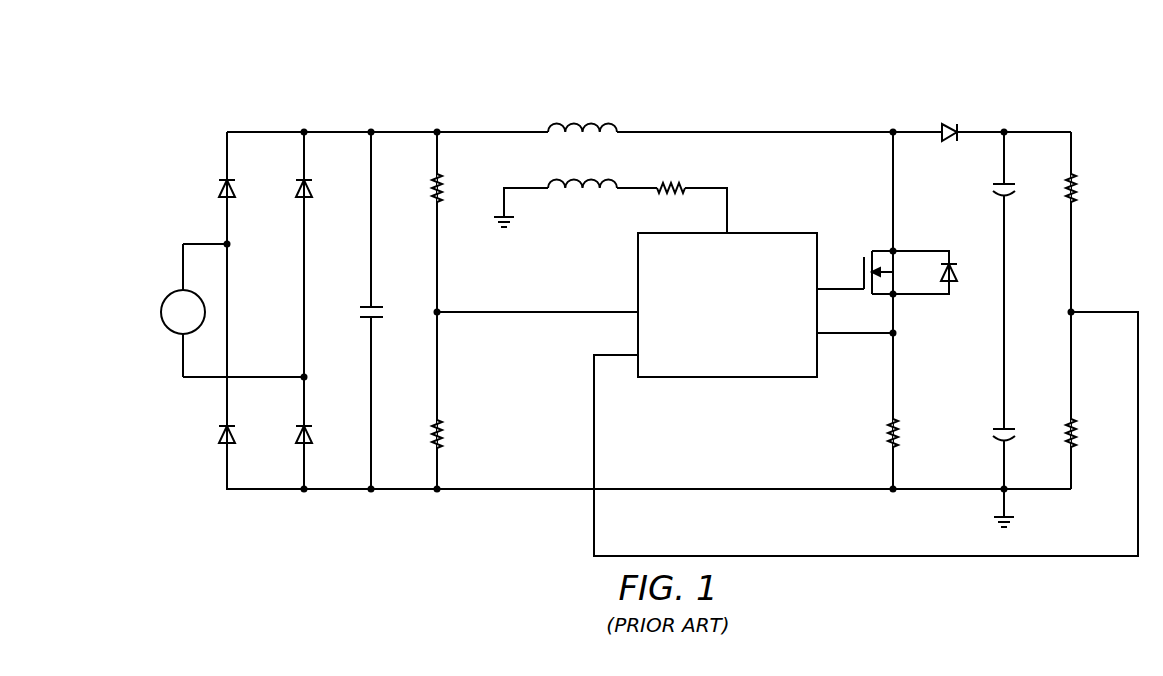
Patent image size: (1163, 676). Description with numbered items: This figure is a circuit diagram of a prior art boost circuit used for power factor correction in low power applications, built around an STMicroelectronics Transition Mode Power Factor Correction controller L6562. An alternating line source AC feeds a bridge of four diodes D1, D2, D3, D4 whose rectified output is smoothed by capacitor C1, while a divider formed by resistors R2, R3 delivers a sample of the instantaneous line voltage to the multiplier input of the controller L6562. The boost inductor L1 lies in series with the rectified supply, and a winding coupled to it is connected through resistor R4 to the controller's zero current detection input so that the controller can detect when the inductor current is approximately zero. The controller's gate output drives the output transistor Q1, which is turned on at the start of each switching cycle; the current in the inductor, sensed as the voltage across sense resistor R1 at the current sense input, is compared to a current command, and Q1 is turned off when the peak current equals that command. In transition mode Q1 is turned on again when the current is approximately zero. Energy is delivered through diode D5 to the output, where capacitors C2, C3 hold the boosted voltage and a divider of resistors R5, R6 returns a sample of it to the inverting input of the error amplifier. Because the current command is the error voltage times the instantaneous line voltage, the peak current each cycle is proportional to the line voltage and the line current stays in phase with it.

The AC voltage source AC is at (183, 312).
The bridge rectifier diode D1 is at (242, 189).
The bridge rectifier diode D2 is at (242, 435).
The bridge rectifier diode D3 is at (319, 189).
The bridge rectifier diode D4 is at (319, 435).
The input filter capacitor C1 is at (385, 313).
The voltage divider resistor R2 is at (452, 188).
The voltage divider resistor R3 is at (452, 434).
The boost inductor L1 is at (582, 112).
The zero current detection resistor R4 is at (671, 176).
The Transition Mode Power Factor Correction (PFC) Controller L6562 is at (727, 320).
The output transistor Q1 is at (925, 272).
The boost output diode D5 is at (948, 119).
The sense resistor R1 is at (909, 433).
The output capacitor C2 is at (1019, 189).
The output capacitor C3 is at (1019, 434).
The output feedback divider resistor R5 is at (1086, 188).
The output feedback divider resistor R6 is at (1086, 433).